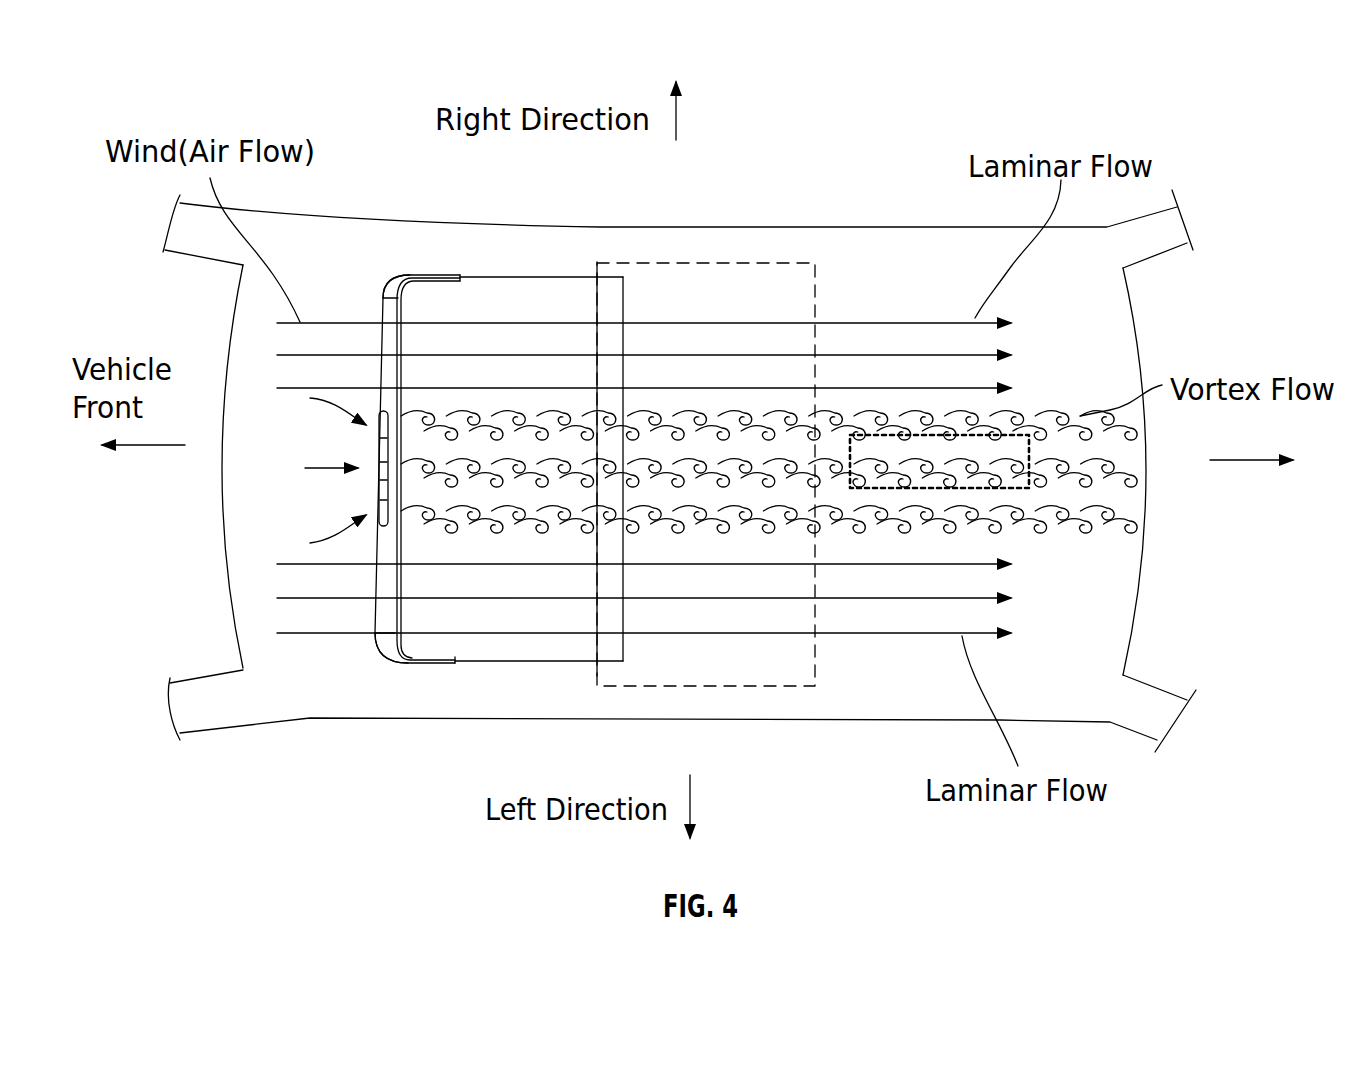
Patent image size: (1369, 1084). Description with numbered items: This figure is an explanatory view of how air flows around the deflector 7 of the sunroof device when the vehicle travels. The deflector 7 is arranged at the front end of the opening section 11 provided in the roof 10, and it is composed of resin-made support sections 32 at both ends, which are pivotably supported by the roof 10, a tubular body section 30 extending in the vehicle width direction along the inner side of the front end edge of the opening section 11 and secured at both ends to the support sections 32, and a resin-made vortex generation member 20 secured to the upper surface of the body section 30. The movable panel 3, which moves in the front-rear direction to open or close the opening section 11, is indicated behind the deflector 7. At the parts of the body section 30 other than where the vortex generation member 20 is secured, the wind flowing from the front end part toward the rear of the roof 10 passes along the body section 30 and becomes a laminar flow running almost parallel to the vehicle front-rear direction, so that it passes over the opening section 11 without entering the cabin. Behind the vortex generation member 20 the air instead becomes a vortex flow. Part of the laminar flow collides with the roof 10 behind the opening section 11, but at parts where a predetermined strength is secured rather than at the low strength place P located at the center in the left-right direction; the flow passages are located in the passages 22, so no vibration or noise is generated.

The roof 10 is at (908, 250).
The body section 30 is at (382, 317).
The support sections 32 is at (395, 292).
The opening section 11 is at (508, 338).
The movable panel 3 is at (750, 272).
The vortex generation member 20 is at (373, 463).
The passages 22 is at (373, 452).
The deflector 7 is at (301, 584).
The low strength place P is at (962, 490).